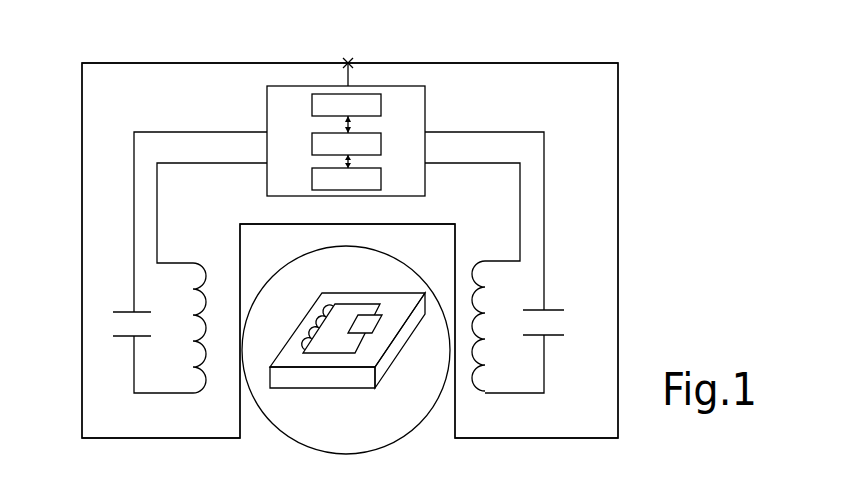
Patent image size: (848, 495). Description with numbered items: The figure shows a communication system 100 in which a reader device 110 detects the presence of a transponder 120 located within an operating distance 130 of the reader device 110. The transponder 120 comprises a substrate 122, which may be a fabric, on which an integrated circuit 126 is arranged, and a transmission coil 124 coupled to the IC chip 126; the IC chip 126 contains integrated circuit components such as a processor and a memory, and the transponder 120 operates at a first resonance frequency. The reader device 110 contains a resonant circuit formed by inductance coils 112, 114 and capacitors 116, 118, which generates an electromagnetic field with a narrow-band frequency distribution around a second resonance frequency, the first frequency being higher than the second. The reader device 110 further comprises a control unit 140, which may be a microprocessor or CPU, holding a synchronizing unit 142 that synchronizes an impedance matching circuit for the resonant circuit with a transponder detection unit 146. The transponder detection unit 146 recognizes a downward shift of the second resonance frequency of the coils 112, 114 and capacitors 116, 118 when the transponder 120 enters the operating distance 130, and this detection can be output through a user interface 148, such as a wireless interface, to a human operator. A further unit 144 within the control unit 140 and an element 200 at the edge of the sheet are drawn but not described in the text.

The communication system 100 is at (674, 108).
The reader device 110 is at (624, 277).
The inductance coil 112 is at (181, 263).
The inductance coil 114 is at (495, 260).
The capacitor 116 is at (122, 337).
The capacitor 118 is at (553, 337).
The transponder 120 is at (345, 374).
The substrate 122 is at (333, 380).
The transmission coil 124 is at (312, 325).
The integrated circuit 126 is at (382, 327).
The operating distance 130 is at (395, 443).
The control unit 140 is at (427, 108).
The synchronizing unit 142 is at (312, 137).
The interface unit 144 is at (312, 97).
The transponder detection unit 146 is at (381, 184).
The user interface 148 is at (355, 60).
The external device 200 is at (633, 488).